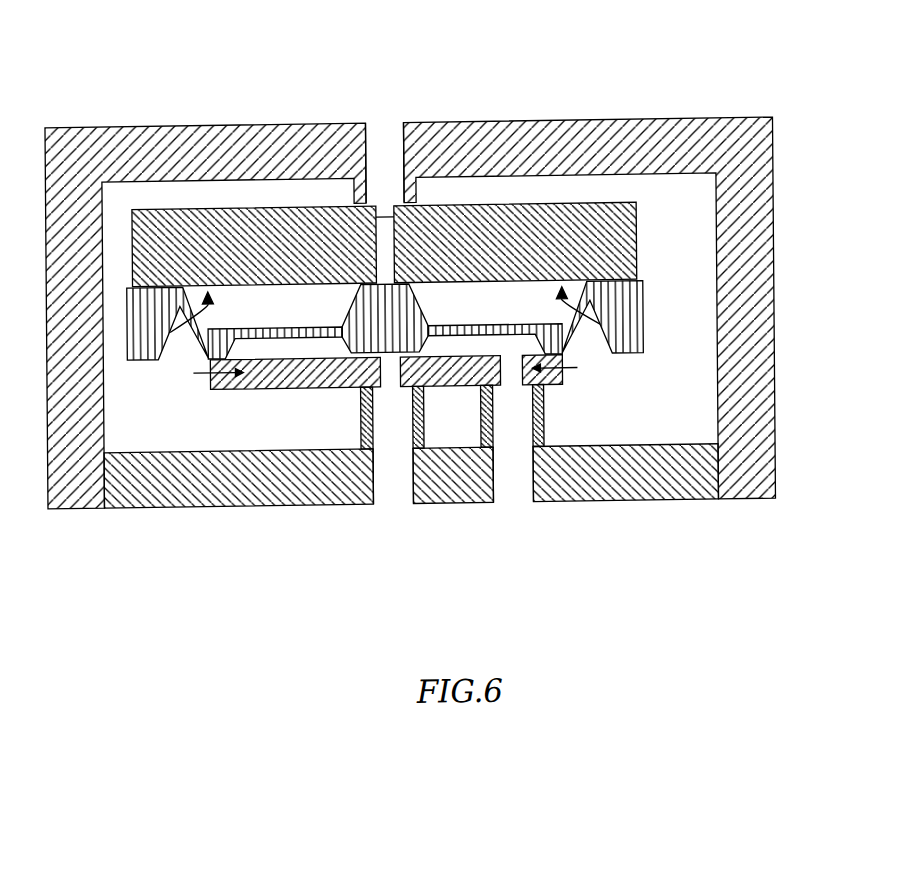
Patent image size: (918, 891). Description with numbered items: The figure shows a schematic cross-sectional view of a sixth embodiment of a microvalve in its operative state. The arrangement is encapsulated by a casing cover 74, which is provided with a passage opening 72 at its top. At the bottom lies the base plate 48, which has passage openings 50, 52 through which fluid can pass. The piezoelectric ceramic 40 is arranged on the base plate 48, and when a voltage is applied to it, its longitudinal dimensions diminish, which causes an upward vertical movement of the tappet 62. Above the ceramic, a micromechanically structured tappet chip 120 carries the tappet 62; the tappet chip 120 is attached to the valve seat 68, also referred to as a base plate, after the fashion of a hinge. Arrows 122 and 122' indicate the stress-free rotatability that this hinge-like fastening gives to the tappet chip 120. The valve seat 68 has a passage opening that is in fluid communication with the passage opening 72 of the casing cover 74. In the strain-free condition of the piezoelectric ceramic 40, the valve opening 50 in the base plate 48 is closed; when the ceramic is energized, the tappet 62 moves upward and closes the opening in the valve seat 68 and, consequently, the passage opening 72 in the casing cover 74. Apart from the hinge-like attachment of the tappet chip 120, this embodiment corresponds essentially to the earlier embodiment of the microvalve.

The piezoelectric ceramic 40 is at (563, 370).
The base plate 48 is at (727, 473).
The passage opening 50 is at (387, 504).
The passage opening 52 is at (510, 499).
The tappet 62 is at (422, 308).
The valve seat 68 is at (598, 246).
The passage opening of casing cover 72 is at (386, 118).
The casing cover 74 is at (752, 155).
The tappet chip 120 is at (645, 308).
The arrow 122 is at (223, 307).
The arrow 122' is at (550, 303).